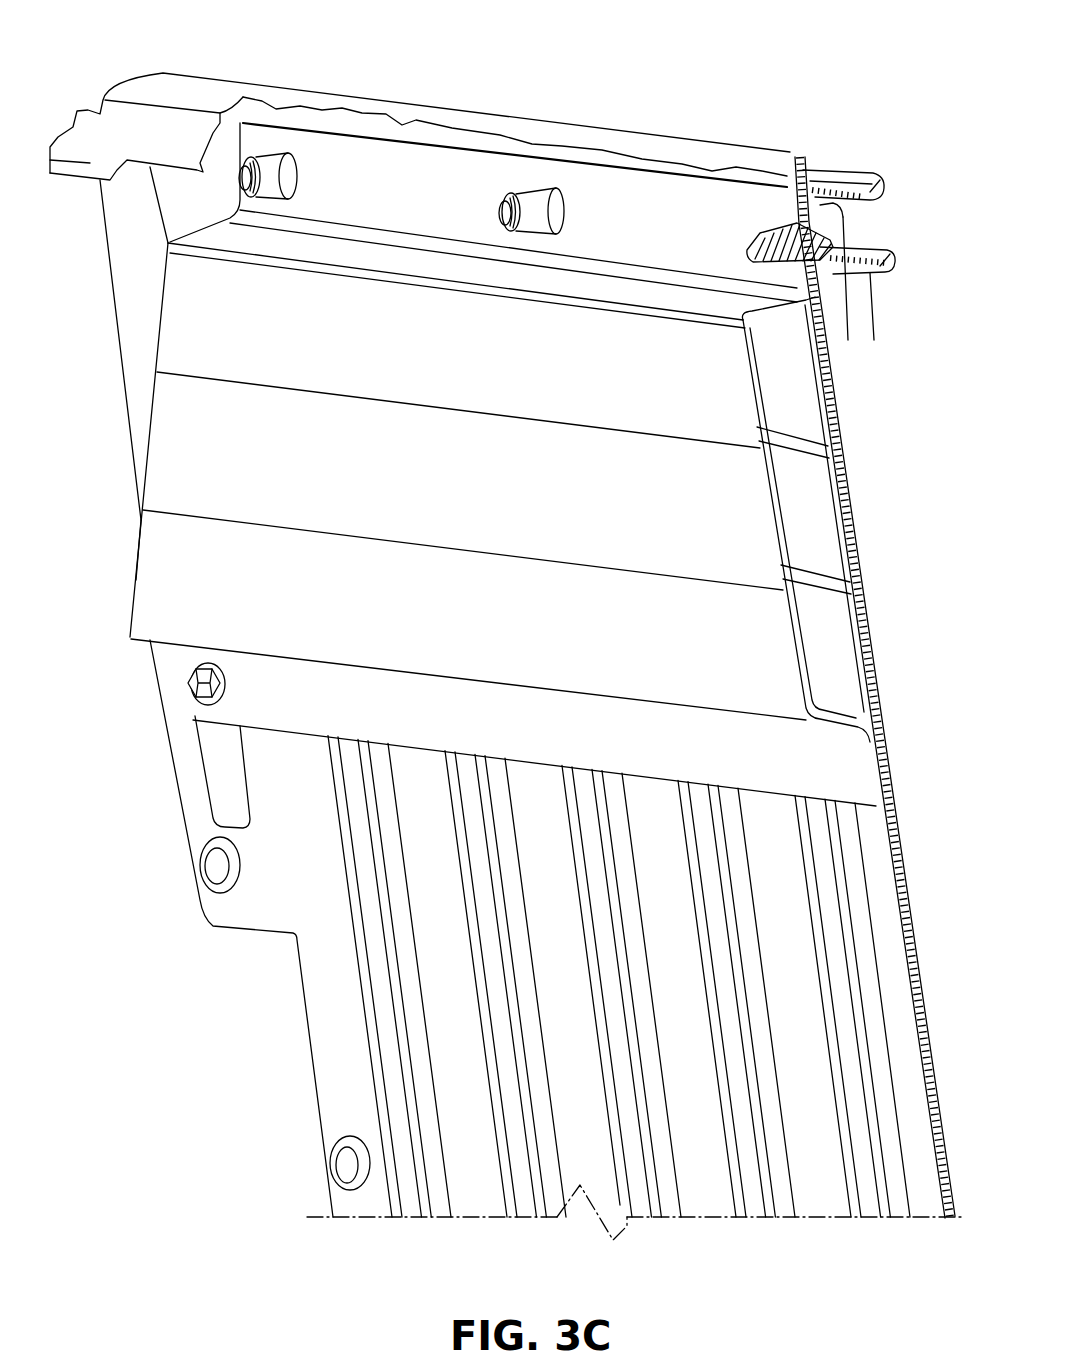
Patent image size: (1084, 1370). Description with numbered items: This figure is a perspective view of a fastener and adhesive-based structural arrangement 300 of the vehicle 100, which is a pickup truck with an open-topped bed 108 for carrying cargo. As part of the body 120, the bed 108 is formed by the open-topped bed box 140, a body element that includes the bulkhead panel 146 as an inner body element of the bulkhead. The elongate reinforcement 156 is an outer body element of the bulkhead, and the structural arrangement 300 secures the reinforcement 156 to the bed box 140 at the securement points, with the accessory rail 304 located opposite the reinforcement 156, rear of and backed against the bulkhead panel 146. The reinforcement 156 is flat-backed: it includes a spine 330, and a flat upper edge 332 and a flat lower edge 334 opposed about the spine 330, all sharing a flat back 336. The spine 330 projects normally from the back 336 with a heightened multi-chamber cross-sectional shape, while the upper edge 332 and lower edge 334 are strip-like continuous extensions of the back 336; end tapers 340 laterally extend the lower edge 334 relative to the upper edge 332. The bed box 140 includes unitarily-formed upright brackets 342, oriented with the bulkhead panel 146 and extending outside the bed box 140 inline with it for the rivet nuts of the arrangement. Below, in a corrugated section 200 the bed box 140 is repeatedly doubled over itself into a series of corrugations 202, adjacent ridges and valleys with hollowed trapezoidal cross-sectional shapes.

The vehicle 100 is at (134, 76).
The bed 108 is at (205, 74).
The body 120 is at (277, 74).
The bed box 140 is at (368, 98).
The bulkhead panel 146 is at (855, 1218).
The reinforcement 156 is at (766, 442).
The corrugated section 200 is at (826, 1218).
The corrugations 202 is at (806, 1182).
The structural arrangement 300 is at (539, 180).
The accessory rail 304 is at (851, 300).
The spine 330 is at (778, 503).
The upper edge 332 is at (863, 320).
The lower edge 334 is at (872, 744).
The back 336 is at (836, 500).
The end tapers 340 is at (142, 482).
The brackets 342 is at (167, 720).